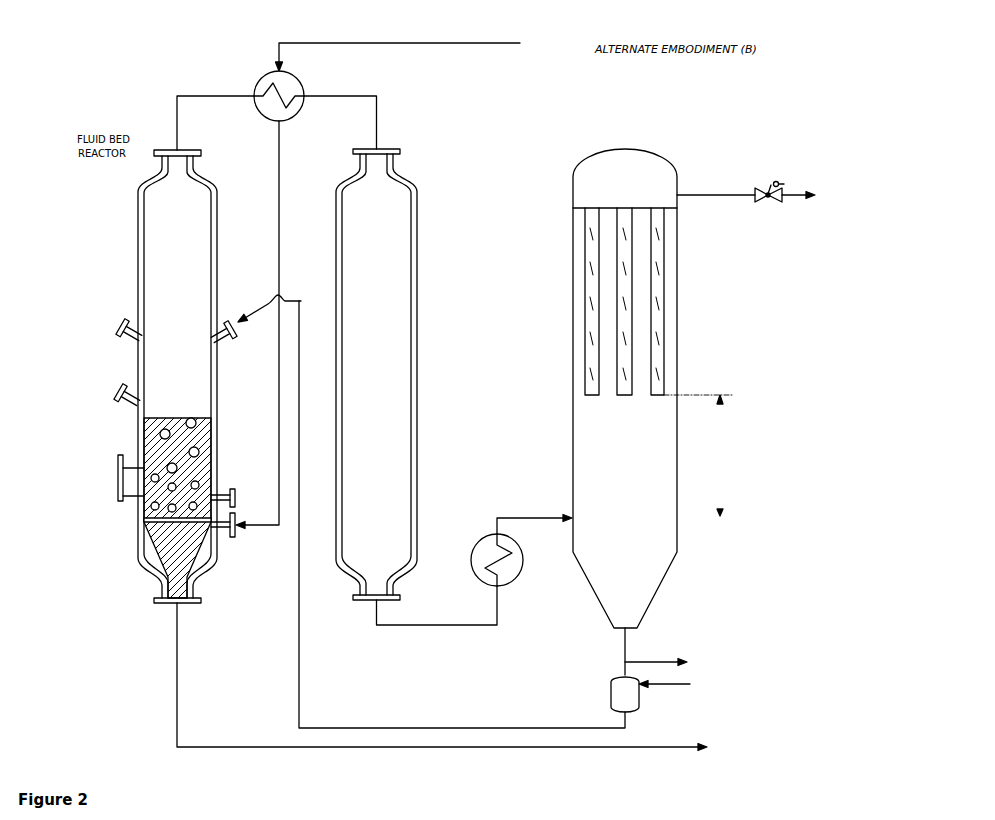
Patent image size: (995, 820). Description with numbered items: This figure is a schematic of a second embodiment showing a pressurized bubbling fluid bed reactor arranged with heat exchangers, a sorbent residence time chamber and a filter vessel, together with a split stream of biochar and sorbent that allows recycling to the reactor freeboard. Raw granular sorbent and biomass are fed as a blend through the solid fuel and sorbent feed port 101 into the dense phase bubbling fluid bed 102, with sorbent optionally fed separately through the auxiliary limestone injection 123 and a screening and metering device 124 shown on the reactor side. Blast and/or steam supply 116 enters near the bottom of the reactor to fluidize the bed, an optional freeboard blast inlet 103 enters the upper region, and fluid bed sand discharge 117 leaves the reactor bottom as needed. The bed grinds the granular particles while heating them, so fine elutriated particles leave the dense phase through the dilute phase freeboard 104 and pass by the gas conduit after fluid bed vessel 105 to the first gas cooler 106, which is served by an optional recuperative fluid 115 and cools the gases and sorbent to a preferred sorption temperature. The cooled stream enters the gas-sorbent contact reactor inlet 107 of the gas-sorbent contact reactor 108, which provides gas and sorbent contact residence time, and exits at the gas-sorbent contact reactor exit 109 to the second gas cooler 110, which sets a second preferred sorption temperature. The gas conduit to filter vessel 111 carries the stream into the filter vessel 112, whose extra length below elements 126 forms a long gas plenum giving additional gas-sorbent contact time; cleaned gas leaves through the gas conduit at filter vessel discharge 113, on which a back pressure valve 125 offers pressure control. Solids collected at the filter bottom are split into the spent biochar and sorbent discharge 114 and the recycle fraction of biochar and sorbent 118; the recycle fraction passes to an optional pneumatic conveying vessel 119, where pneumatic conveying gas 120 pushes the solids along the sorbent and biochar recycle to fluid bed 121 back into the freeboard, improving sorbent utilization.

The solid fuel and sorbent feed port 101 is at (118, 483).
The dense phase bubbling fluid bed 102 is at (150, 455).
The freeboard blast inlet 103 is at (121, 327).
The dilute phase freeboard 104 is at (165, 330).
The gas conduit after fluid bed vessel 105 is at (177, 150).
The first gas cooler 106 is at (263, 73).
The gas-sorbent contact reactor inlet 107 is at (383, 149).
The gas-sorbent contact reactor 108 is at (378, 250).
The gas-sorbent contact reactor exit 109 is at (372, 622).
The second gas cooler 110 is at (477, 582).
The gas conduit to filter vessel 111 is at (533, 517).
The filter vessel 112 is at (573, 300).
The gas conduit at filter vessel discharge 113 is at (703, 195).
The spent biochar and sorbent discharge 114 is at (670, 662).
The recuperative fluid to first exchanger 115 is at (412, 54).
The blast and/or steam supply to fluid bed reactor 116 is at (234, 531).
The fluid bed sand discharge 117 is at (456, 678).
The recycle fraction of biochar and sorbent 118 is at (622, 668).
The pneumatic conveying vessel 119 is at (639, 696).
The pneumatic conveying gas 120 is at (677, 684).
The sorbent and biochar recycle to fluid bed 121 is at (235, 325).
The limestone injection, auxiliary 123 is at (232, 489).
The screening and metering device 124 is at (119, 390).
The back pressure valve 125 is at (776, 181).
The extra length in filter vessel below elements 126 is at (698, 455).